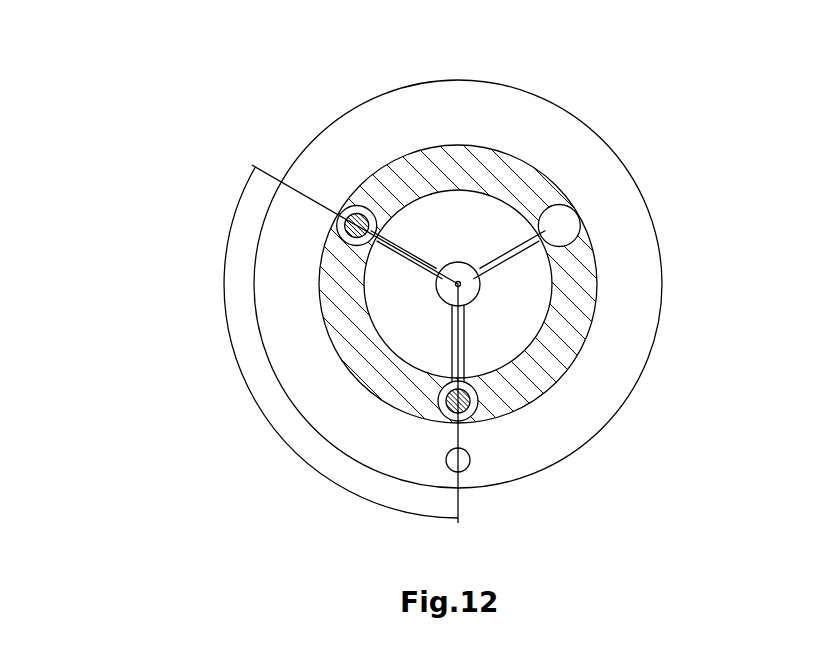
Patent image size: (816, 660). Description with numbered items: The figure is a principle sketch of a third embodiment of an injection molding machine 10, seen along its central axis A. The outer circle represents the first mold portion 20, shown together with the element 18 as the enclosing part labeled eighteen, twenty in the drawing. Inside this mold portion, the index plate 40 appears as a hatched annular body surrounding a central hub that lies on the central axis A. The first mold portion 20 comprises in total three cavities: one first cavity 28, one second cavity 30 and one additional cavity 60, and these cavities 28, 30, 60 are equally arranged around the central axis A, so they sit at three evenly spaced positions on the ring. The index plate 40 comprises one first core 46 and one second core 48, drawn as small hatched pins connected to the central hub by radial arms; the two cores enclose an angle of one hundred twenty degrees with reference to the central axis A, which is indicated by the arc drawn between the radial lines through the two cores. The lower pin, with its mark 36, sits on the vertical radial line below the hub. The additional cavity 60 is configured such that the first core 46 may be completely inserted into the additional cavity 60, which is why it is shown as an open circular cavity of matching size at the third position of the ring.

The injection molding machine 10 is at (117, 85).
The housing 18 is at (458, 272).
The first mold portion 20 is at (585, 124).
The index plate 40 is at (395, 190).
The first cavity 28 is at (392, 393).
The central axis A is at (452, 290).
The first core 46 is at (478, 398).
The pin 36 is at (466, 410).
The second cavity 30 is at (348, 202).
The second core 48 is at (342, 237).
The additional cavity 60 is at (557, 217).